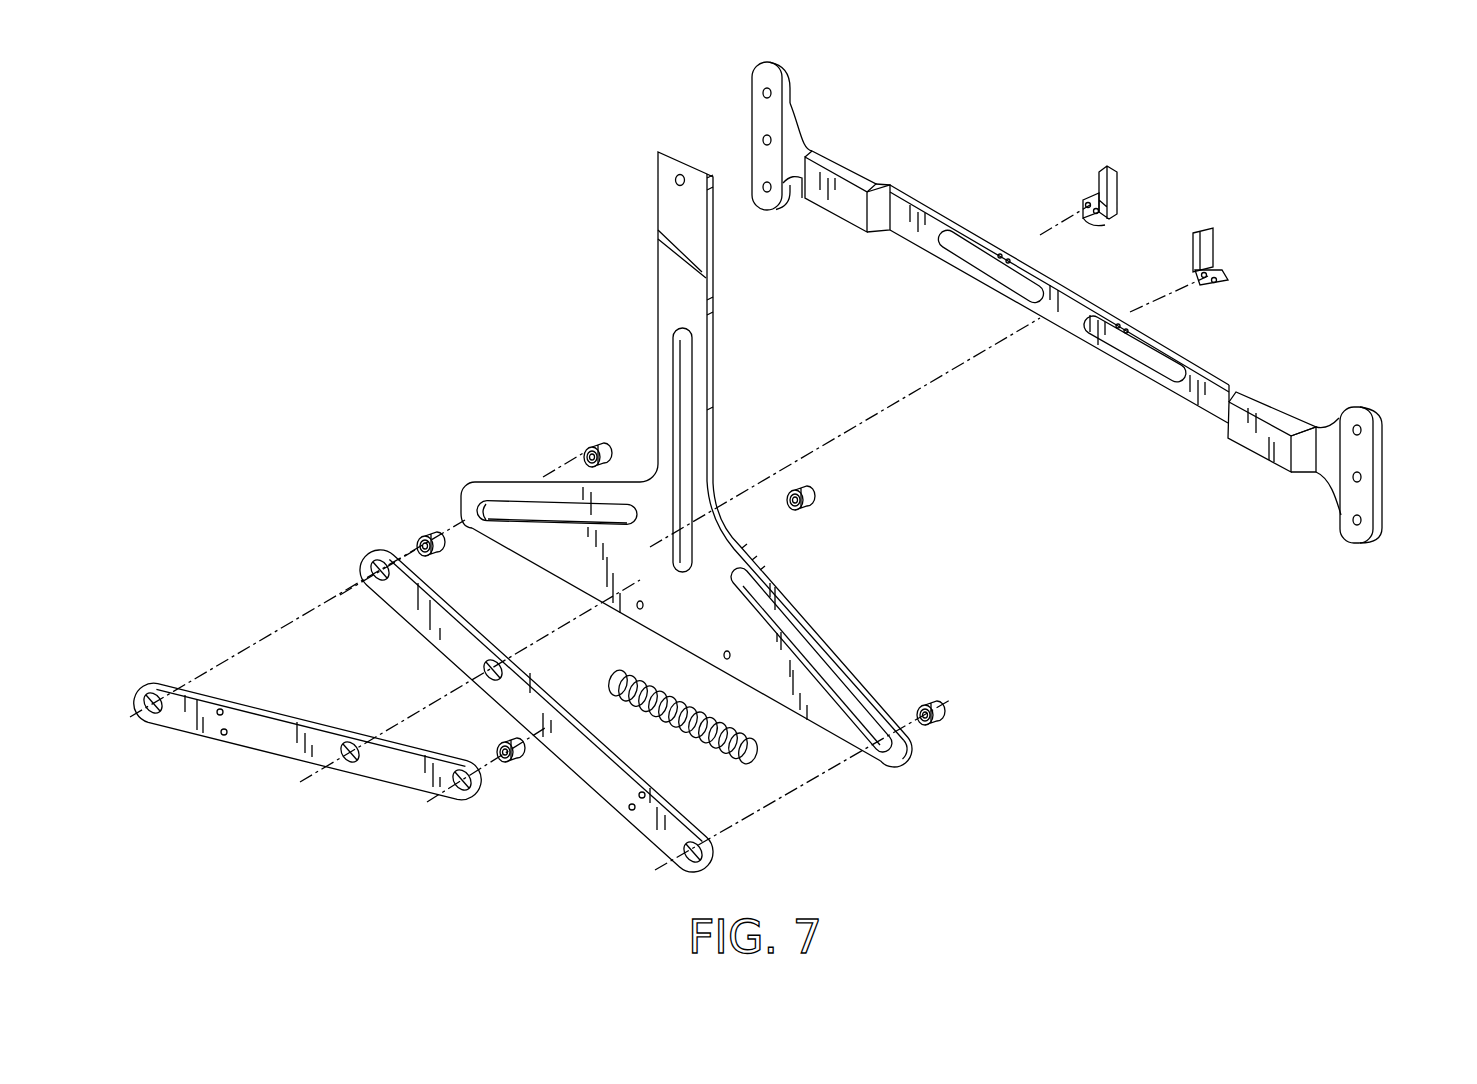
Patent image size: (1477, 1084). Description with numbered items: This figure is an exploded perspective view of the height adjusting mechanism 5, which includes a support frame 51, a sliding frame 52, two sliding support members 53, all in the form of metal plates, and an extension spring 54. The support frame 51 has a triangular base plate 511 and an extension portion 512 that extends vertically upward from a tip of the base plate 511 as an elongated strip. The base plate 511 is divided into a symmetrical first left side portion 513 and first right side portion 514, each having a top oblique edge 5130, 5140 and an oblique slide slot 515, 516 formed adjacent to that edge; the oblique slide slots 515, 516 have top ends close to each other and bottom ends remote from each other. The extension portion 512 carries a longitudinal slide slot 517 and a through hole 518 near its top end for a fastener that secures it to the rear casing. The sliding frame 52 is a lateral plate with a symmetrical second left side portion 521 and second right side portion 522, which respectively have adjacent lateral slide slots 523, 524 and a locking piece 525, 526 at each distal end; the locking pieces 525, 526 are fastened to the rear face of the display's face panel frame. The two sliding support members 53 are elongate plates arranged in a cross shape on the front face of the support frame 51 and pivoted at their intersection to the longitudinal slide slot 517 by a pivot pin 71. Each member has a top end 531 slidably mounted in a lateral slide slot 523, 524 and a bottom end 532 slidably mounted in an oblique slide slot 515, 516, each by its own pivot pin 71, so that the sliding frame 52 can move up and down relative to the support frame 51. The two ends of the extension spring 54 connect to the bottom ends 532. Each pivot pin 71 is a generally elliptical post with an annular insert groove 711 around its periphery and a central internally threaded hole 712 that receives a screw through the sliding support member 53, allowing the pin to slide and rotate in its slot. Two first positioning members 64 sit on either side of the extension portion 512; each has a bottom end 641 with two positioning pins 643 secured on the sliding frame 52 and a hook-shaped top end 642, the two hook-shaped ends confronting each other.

The height adjusting mechanism 5 is at (501, 181).
The support frame 51 is at (648, 478).
The triangular base plate 511 is at (606, 570).
The extension portion 512 is at (718, 310).
The first left side portion 513 is at (518, 490).
The top oblique edge 5130 is at (495, 488).
The first right side portion 514 is at (812, 640).
The top oblique edge 5140 is at (795, 600).
The oblique slide slot 515 is at (538, 508).
The oblique slide slot 516 is at (842, 682).
The longitudinal slide slot 517 is at (692, 445).
The through hole 518 is at (676, 180).
The sliding frame 52 is at (1240, 383).
The second left side portion 521 is at (897, 158).
The second right side portion 522 is at (1240, 344).
The lateral slide slot 523 is at (980, 257).
The lateral slide slot 524 is at (1155, 357).
The locking piece 525 is at (760, 120).
The locking piece 526 is at (1366, 493).
The sliding support member 53 is at (253, 738).
The top end 531 is at (380, 596).
The bottom end 532 is at (144, 734).
The extension spring 54 is at (756, 748).
The first positioning member 64 is at (1085, 160).
The bottom end 641 is at (1084, 200).
The hook-shaped top end 642 is at (1112, 176).
The positioning pin 643 is at (1094, 215).
The pivot pin 71 is at (588, 448).
The annular insert groove 711 is at (813, 497).
The internally threaded hole 712 is at (798, 508).